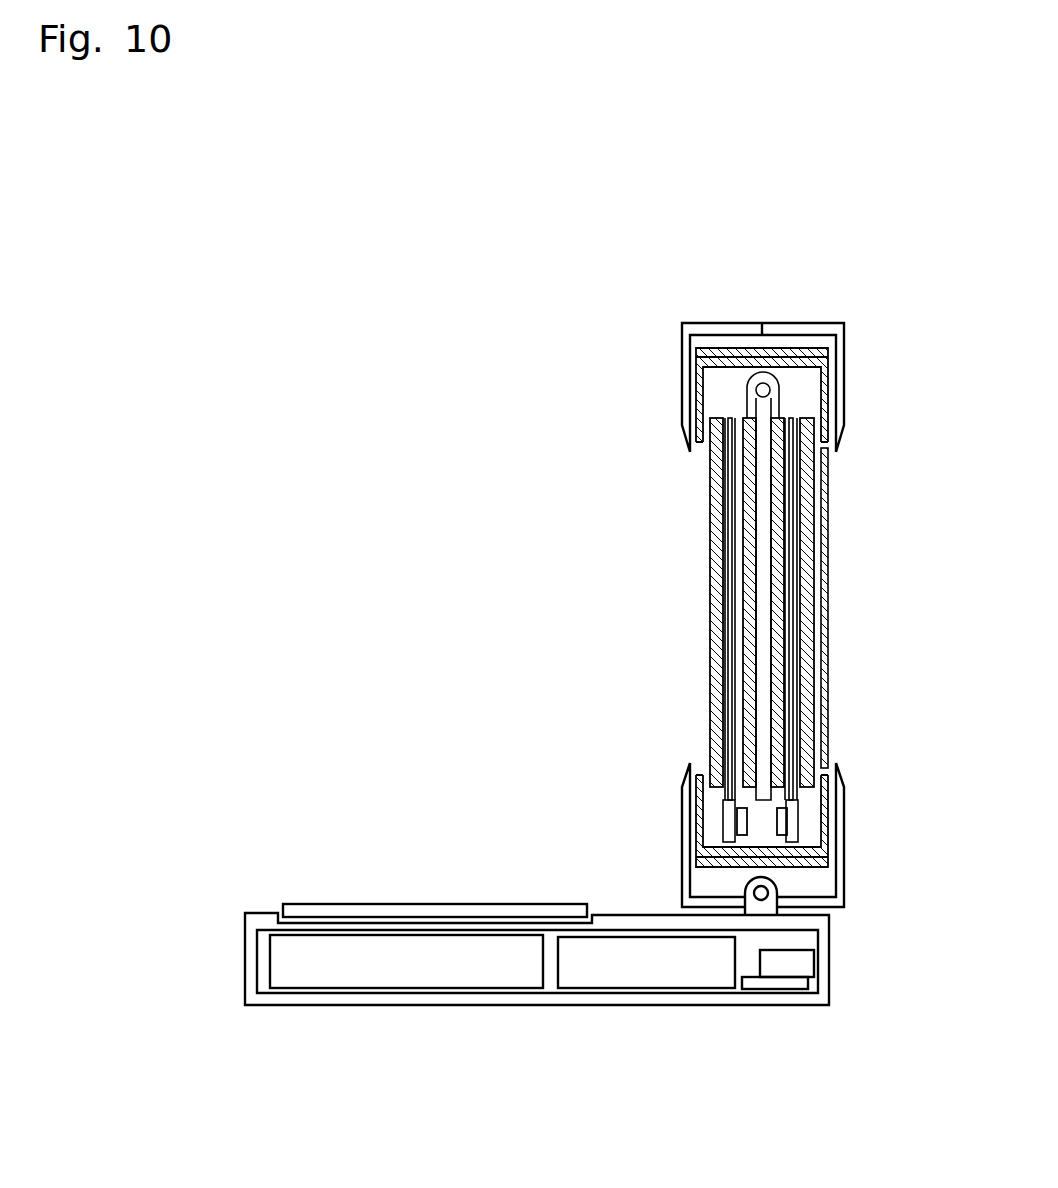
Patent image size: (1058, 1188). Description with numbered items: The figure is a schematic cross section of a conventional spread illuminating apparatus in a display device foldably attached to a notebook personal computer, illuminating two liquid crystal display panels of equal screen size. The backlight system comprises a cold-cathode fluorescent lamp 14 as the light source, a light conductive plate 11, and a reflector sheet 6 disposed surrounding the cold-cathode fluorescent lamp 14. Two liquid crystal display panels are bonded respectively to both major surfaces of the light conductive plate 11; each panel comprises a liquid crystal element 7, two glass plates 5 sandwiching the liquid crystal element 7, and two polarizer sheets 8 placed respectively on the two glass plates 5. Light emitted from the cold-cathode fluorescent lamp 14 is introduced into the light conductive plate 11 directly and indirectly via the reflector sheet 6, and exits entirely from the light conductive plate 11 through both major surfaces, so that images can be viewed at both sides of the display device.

The glass plate 5 is at (730, 685).
The reflector sheet 6 is at (765, 388).
The liquid crystal element 7 is at (735, 750).
The polarizer sheet 8 is at (723, 553).
The light conductive plate 11 is at (760, 583).
The cold-cathode fluorescent lamp 14 is at (771, 390).